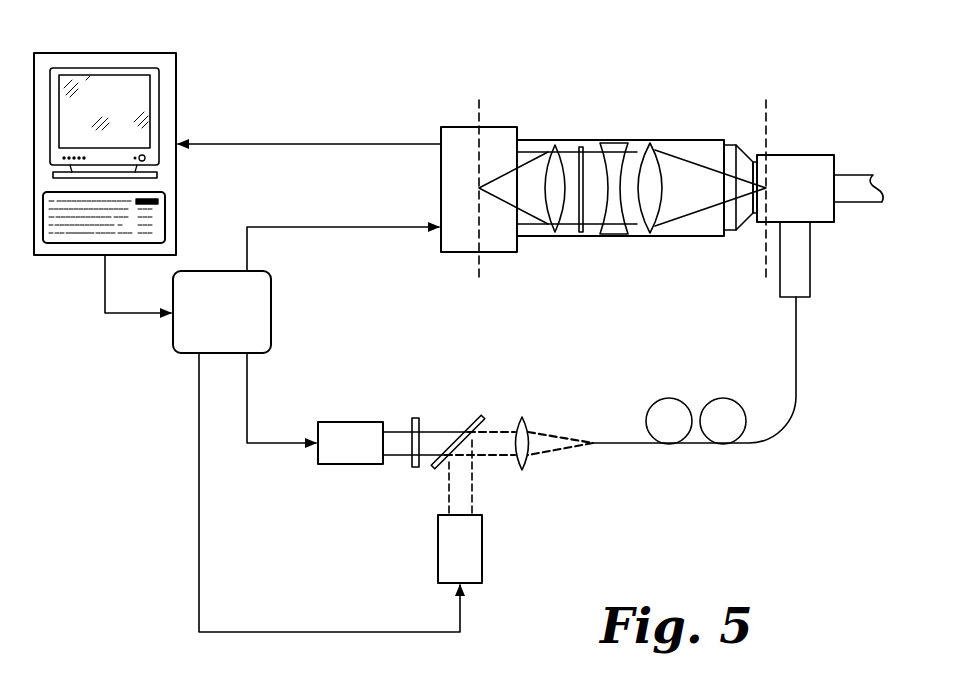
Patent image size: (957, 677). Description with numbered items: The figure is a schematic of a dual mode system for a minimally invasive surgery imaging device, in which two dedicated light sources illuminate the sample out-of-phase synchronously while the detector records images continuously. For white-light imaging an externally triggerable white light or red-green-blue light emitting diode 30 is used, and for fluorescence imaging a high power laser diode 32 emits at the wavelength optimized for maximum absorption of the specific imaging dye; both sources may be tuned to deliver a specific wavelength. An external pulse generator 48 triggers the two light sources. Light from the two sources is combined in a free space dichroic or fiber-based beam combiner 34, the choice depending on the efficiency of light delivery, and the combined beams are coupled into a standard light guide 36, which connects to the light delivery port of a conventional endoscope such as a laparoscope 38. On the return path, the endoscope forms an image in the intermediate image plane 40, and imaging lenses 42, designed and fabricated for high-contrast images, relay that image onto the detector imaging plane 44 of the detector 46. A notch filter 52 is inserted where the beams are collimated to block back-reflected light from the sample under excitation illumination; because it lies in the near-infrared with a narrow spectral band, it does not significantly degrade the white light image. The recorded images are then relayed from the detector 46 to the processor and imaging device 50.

The light emitting diode 30 is at (474, 557).
The laser diode 32 is at (364, 456).
The beam combiner 34 is at (527, 409).
The light guide 36 is at (790, 418).
The laparoscope 38 is at (913, 201).
The intermediate image plane 40 is at (765, 260).
The imaging lenses 42 is at (672, 131).
The detector imaging plane 44 is at (478, 262).
The detector 46 is at (447, 137).
The external pulse generator 48 is at (232, 326).
The processor and imaging device 50 is at (176, 53).
The notch filter 52 is at (580, 236).